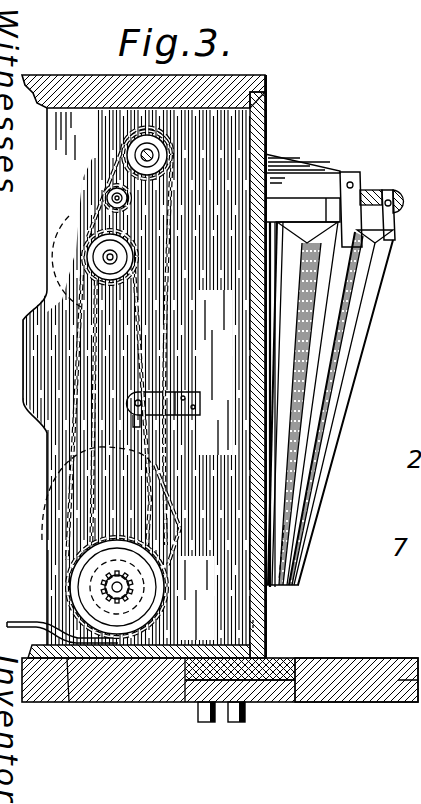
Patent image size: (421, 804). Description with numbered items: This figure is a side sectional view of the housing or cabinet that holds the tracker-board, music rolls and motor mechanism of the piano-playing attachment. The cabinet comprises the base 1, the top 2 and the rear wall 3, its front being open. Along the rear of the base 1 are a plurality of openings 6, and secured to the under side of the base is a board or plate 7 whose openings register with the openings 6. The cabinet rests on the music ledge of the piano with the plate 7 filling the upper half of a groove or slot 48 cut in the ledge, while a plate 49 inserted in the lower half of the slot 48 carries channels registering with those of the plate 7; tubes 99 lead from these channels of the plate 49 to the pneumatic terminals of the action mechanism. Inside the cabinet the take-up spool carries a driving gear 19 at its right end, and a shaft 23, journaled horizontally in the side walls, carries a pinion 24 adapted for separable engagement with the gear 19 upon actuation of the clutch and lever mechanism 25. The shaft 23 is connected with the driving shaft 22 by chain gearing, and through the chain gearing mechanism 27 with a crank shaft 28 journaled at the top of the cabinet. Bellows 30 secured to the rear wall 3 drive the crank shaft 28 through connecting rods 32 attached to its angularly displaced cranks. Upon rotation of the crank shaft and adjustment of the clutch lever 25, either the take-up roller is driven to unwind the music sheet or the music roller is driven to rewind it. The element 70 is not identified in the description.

The base 1 is at (200, 653).
The top 2 is at (60, 80).
The rear wall 3 is at (264, 598).
The openings 6 is at (82, 350).
The board or plate 7 is at (296, 668).
The driving gear 19 is at (48, 505).
The driving shaft 22 is at (105, 259).
The shaft 23 is at (110, 586).
The pinion 24 is at (264, 626).
The clutch and lever mechanism 25 is at (69, 702).
The chain gearing mechanism 27 is at (103, 191).
The crank shaft 28 is at (152, 152).
The bellows 30 is at (338, 351).
The connecting rods 32 is at (370, 190).
The groove or slot 48 is at (297, 684).
The plate 49 is at (267, 690).
The housing 70 is at (226, 145).
The tubes 99 is at (229, 703).